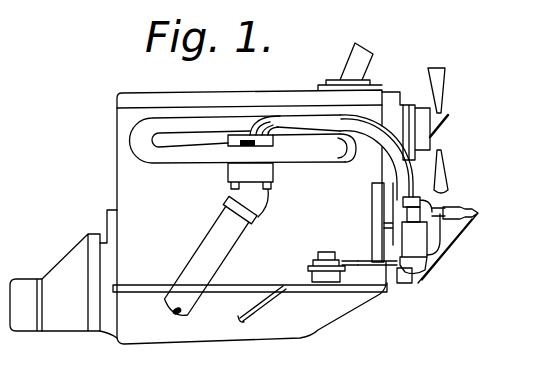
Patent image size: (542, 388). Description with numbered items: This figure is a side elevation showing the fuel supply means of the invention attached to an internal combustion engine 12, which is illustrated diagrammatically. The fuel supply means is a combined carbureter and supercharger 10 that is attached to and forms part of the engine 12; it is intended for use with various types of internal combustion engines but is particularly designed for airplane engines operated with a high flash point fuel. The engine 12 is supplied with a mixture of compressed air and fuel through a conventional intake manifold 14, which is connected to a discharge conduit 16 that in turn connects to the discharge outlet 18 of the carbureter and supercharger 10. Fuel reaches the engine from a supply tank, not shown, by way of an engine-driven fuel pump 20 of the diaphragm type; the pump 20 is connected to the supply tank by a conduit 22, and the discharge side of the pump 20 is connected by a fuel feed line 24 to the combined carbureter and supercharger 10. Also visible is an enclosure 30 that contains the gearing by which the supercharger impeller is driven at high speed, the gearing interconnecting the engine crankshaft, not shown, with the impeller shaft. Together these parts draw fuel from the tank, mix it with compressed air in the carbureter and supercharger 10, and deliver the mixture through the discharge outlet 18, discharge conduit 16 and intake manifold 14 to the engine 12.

The combined carbureter and supercharger 10 is at (470, 203).
The internal combustion engine 12 is at (128, 98).
The intake manifold 14 is at (243, 160).
The discharge conduit 16 is at (373, 113).
The discharge outlet 18 is at (403, 203).
The fuel pump 20 is at (310, 257).
The conduit 22 is at (237, 318).
The fuel feed line 24 is at (352, 263).
The enclosure 30 is at (393, 232).